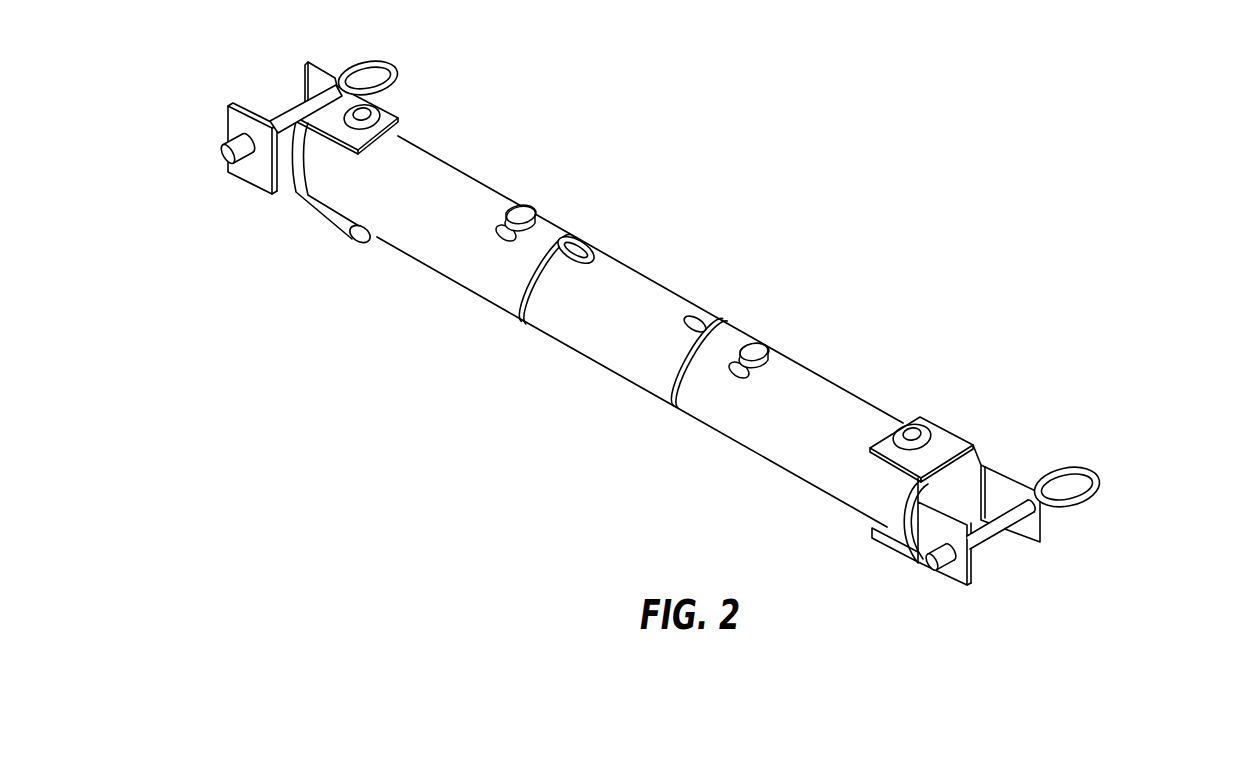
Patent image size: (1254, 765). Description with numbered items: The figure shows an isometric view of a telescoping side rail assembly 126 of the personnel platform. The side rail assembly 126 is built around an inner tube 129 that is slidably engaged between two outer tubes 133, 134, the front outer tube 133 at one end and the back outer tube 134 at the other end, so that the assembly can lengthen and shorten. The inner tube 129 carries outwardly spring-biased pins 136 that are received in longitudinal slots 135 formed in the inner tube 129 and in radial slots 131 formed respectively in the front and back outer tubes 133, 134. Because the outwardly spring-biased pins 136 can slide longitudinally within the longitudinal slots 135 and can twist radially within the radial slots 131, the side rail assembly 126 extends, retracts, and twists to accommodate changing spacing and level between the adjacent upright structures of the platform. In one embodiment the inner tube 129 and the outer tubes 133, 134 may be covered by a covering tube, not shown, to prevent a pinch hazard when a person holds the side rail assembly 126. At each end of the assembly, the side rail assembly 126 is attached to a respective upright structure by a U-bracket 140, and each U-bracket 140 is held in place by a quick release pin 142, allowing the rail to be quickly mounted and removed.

The side rail assembly 126 is at (676, 319).
The inner tube 129 is at (650, 287).
The radial slots 131 is at (500, 243).
The outer tube 133 is at (397, 234).
The outer tube 134 is at (807, 436).
The longitudinal slots 135 is at (540, 312).
The outwardly spring-biased pins 136 is at (526, 208).
The U-bracket 140 is at (398, 120).
The quick release pin 142 is at (222, 152).